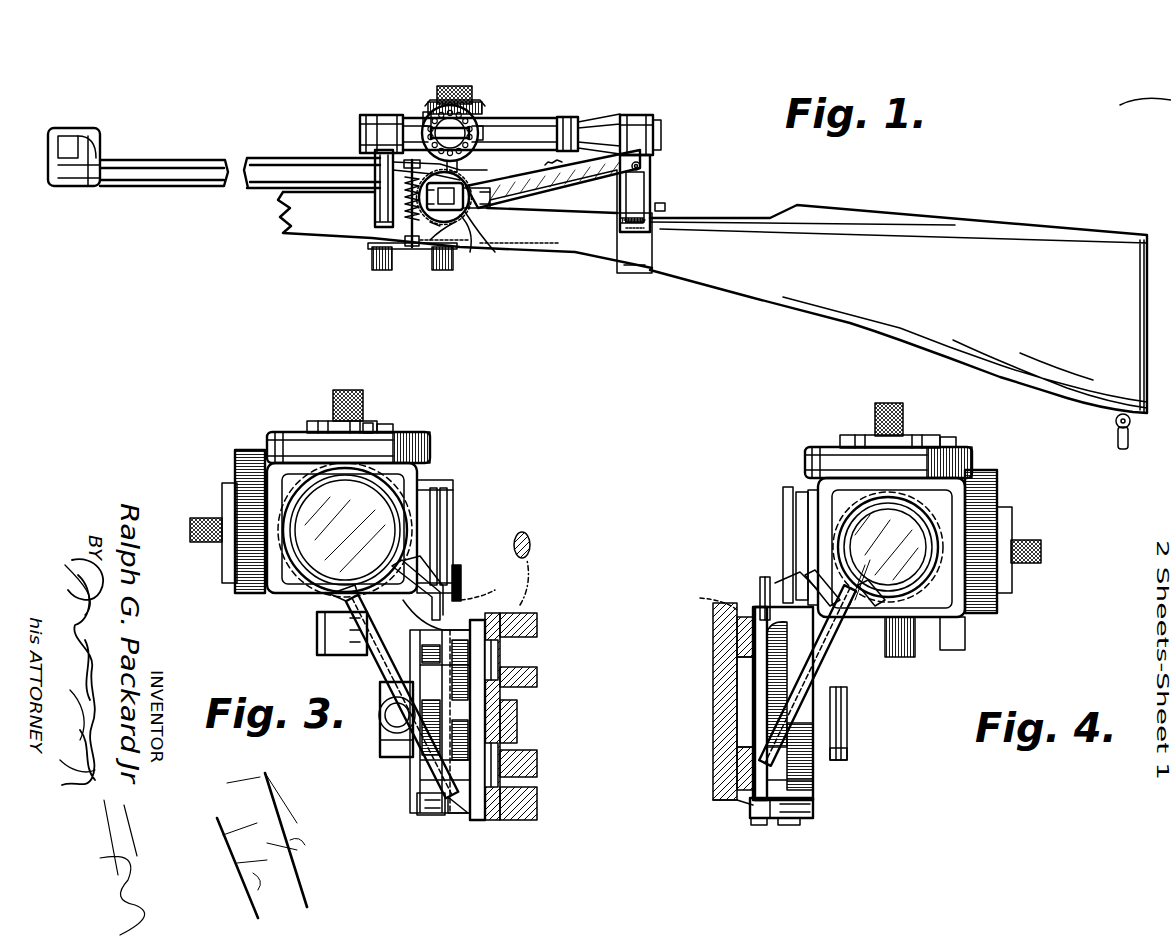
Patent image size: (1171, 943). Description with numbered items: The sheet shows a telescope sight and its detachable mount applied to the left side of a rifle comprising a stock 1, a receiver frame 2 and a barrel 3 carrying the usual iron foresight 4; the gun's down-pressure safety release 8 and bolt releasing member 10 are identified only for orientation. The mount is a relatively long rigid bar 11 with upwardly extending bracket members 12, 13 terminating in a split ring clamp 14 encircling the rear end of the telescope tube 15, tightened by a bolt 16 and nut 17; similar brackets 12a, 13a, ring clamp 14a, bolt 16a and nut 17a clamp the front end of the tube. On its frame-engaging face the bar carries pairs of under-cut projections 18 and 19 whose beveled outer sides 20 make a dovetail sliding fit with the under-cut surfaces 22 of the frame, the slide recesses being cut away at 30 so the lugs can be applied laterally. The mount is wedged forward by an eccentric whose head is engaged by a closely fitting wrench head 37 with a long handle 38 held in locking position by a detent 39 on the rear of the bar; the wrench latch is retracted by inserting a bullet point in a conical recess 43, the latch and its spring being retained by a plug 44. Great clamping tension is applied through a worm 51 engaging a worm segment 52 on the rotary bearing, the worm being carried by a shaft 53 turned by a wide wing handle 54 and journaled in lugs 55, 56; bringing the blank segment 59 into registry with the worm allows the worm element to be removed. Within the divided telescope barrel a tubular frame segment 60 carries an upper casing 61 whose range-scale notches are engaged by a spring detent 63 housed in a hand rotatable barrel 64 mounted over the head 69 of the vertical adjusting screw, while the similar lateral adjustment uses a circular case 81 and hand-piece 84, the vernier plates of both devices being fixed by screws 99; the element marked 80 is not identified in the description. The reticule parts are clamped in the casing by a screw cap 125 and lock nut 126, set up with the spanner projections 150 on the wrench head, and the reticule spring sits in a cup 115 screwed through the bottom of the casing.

In FIG. 1, the stock 1 is at (898, 327).
In FIG. 1, the receiver frame 2 is at (383, 222).
In FIG. 3, the receiver frame 2 is at (520, 716).
In FIG. 4, the receiver frame 2 is at (712, 712).
In FIG. 1, the barrel 3 is at (190, 178).
In FIG. 1, the iron foresight 4 is at (70, 140).
In FIG. 1, the down-pressure safety release 8 is at (666, 207).
In FIG. 1, the bolt releasing member 10 is at (642, 164).
In FIG. 1, the rigid bar 11 is at (580, 203).
In FIG. 3, the rigid bar 11 is at (486, 700).
In FIG. 4, the rigid bar 11 is at (778, 692).
In FIG. 1, the bracket member 12 is at (648, 188).
In FIG. 3, the bracket member 12 is at (380, 668).
In FIG. 1, the bracket member 12a is at (388, 176).
In FIG. 4, the bracket member 12a is at (838, 676).
In FIG. 3, the bracket member 13 is at (428, 603).
In FIG. 4, the bracket member 13a is at (807, 598).
In FIG. 1, the ring clamp 14 is at (640, 120).
In FIG. 3, the ring clamp 14 is at (450, 492).
In FIG. 1, the ring clamp 14a is at (385, 120).
In FIG. 4, the ring clamp 14a is at (918, 528).
In FIG. 1, the telescope tube 15 is at (578, 130).
In FIG. 3, the bolt 16 is at (414, 596).
In FIG. 1, the bolt 16a is at (392, 160).
In FIG. 4, the bolt 16a is at (851, 612).
In FIG. 3, the nut 17 is at (324, 620).
In FIG. 4, the nut 17a is at (786, 576).
In FIG. 3, the under-cut projection 18 is at (500, 660).
In FIG. 4, the under-cut projection 19 is at (745, 660).
In FIG. 3, the beveled side 20 is at (535, 640).
In FIG. 4, the beveled side 20 is at (740, 632).
In FIG. 3, the under-cut surface 22 is at (540, 596).
In FIG. 4, the under-cut surface 22 is at (735, 600).
In FIG. 1, the cut-away portion 30 is at (445, 196).
In FIG. 1, the wrench head 37 is at (458, 207).
In FIG. 3, the wrench head 37 is at (398, 745).
In FIG. 4, the wrench head 37 is at (848, 704).
In FIG. 1, the handle 38 is at (553, 179).
In FIG. 3, the handle 38 is at (462, 582).
In FIG. 4, the handle 38 is at (760, 586).
In FIG. 3, the detent 39 is at (472, 598).
In FIG. 1, the conical recess 43 is at (490, 205).
In FIG. 3, the plug 44 is at (395, 715).
In FIG. 1, the worm 51 is at (403, 210).
In FIG. 1, the worm segment 52 is at (440, 226).
In FIG. 3, the worm segment 52 is at (420, 810).
In FIG. 1, the shaft 53 is at (385, 268).
In FIG. 4, the shaft 53 is at (815, 814).
In FIG. 1, the wing handle 54 is at (442, 268).
In FIG. 1, the lug 55 is at (455, 222).
In FIG. 1, the lug 56 is at (405, 235).
In FIG. 1, the blank segment 59 is at (478, 212).
In FIG. 1, the tubular frame segment 60 is at (478, 120).
In FIG. 3, the tubular frame segment 60 is at (408, 478).
In FIG. 4, the tubular frame segment 60 is at (822, 486).
In FIG. 1, the upper casing 61 is at (478, 110).
In FIG. 3, the upper casing 61 is at (430, 442).
In FIG. 4, the upper casing 61 is at (830, 452).
In FIG. 1, the spring detent 63 is at (480, 105).
In FIG. 3, the spring detent 63 is at (362, 422).
In FIG. 1, the hand rotatable barrel 64 is at (460, 86).
In FIG. 3, the hand rotatable barrel 64 is at (348, 405).
In FIG. 4, the hand rotatable barrel 64 is at (903, 425).
In FIG. 3, the head 69 is at (373, 430).
In FIG. 4, the head 69 is at (915, 440).
In FIG. 3, the side drum 80 is at (248, 466).
In FIG. 4, the side drum 80 is at (990, 502).
In FIG. 1, the circular case 81 is at (480, 133).
In FIG. 3, the circular case 81 is at (222, 540).
In FIG. 1, the hand-piece 84 is at (438, 114).
In FIG. 4, the hand-piece 84 is at (1018, 563).
In FIG. 3, the screws 99 is at (400, 432).
In FIG. 4, the screws 99 is at (940, 447).
In FIG. 1, the cup 115 is at (480, 134).
In FIG. 3, the screw cap 125 is at (450, 526).
In FIG. 4, the screw cap 125 is at (786, 500).
In FIG. 3, the lock nut 126 is at (445, 506).
In FIG. 4, the lock nut 126 is at (812, 526).
In FIG. 4, the spanner projections 150 is at (848, 755).